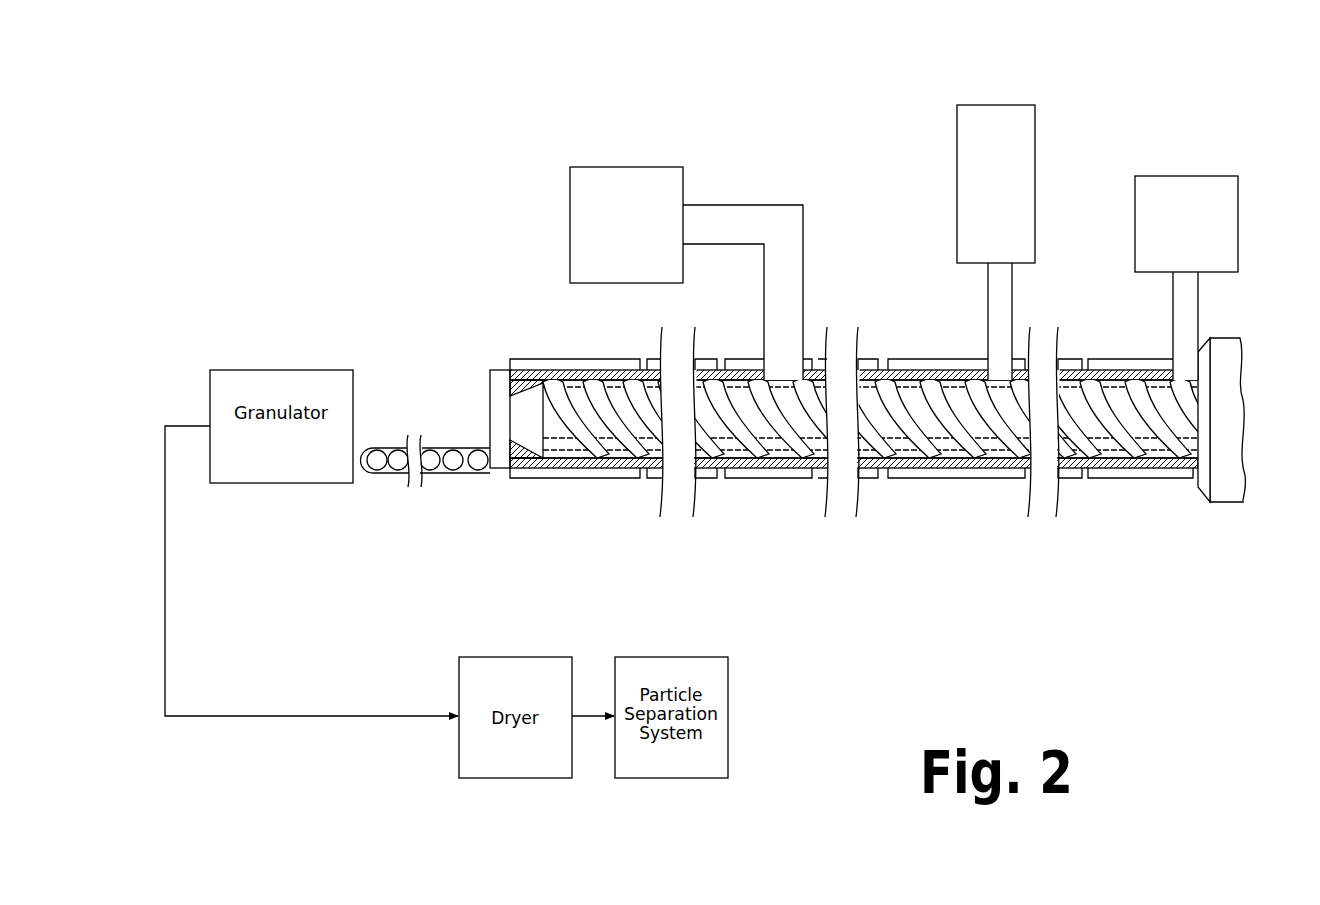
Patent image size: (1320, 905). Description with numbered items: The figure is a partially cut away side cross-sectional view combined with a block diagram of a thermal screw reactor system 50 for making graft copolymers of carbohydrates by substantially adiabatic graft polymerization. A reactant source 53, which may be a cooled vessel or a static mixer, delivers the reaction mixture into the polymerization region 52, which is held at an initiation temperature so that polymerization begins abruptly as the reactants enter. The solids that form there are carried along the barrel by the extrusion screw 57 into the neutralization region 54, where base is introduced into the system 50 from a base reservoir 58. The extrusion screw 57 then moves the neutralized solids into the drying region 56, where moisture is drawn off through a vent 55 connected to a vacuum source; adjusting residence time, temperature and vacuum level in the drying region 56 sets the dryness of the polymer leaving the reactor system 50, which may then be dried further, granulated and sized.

The thermal screw reactor system 50 is at (940, 612).
The polymerization region 52 is at (1120, 478).
The reactant source 53 is at (1137, 193).
The neutralization region 54 is at (933, 478).
The vent 55 is at (780, 366).
The drying region 56 is at (757, 478).
The extrusion screw 57 is at (550, 412).
The base reservoir 58 is at (1002, 110).